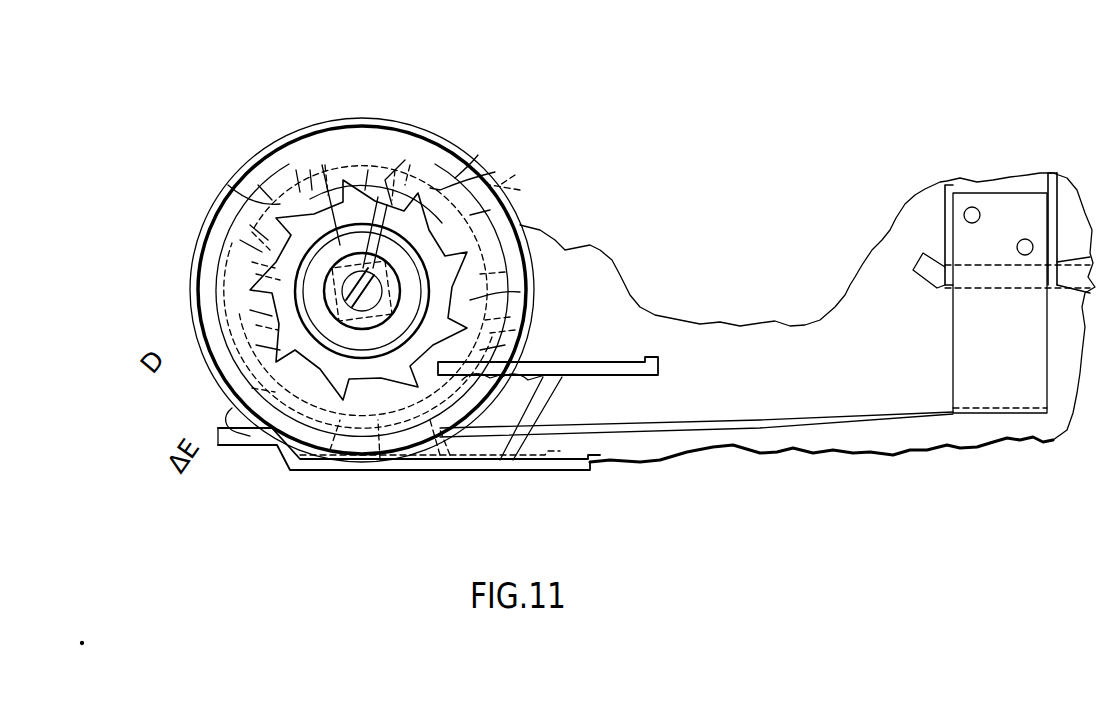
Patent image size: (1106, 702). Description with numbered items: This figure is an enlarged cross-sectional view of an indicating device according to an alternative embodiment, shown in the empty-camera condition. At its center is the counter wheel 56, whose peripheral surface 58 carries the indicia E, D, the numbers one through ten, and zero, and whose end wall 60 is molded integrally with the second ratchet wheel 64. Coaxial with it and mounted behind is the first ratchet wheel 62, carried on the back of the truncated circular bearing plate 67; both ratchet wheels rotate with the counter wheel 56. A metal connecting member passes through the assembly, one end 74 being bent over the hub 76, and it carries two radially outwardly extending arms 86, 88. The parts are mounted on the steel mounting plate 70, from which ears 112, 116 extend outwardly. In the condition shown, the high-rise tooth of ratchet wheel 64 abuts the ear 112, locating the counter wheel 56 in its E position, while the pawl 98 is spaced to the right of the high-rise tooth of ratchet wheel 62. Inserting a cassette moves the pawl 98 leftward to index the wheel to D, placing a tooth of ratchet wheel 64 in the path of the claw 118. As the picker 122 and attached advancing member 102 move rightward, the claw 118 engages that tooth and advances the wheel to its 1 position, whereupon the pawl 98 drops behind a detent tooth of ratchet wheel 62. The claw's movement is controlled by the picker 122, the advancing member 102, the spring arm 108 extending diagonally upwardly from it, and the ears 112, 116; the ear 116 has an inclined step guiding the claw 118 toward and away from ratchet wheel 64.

The counter wheel 56 is at (246, 150).
The peripheral surface 58 is at (228, 185).
The end of connecting member 74 is at (245, 212).
The end wall 60 is at (528, 240).
The arm 88 is at (252, 262).
The claw 118 is at (240, 395).
The number 1 indicium 1 is at (135, 289).
The hub 76 is at (310, 170).
The first ratchet wheel 62 is at (325, 165).
The second ratchet wheel 64 is at (322, 165).
The arm 86 is at (410, 165).
The pawl 98 is at (478, 155).
The ear 112 is at (660, 360).
The spring arm 108 is at (520, 402).
The ear 116 is at (567, 465).
The advancing member 102 is at (747, 420).
The mounting plate 70 is at (856, 358).
The picker 122 is at (995, 182).
The bearing plate 67 is at (330, 450).